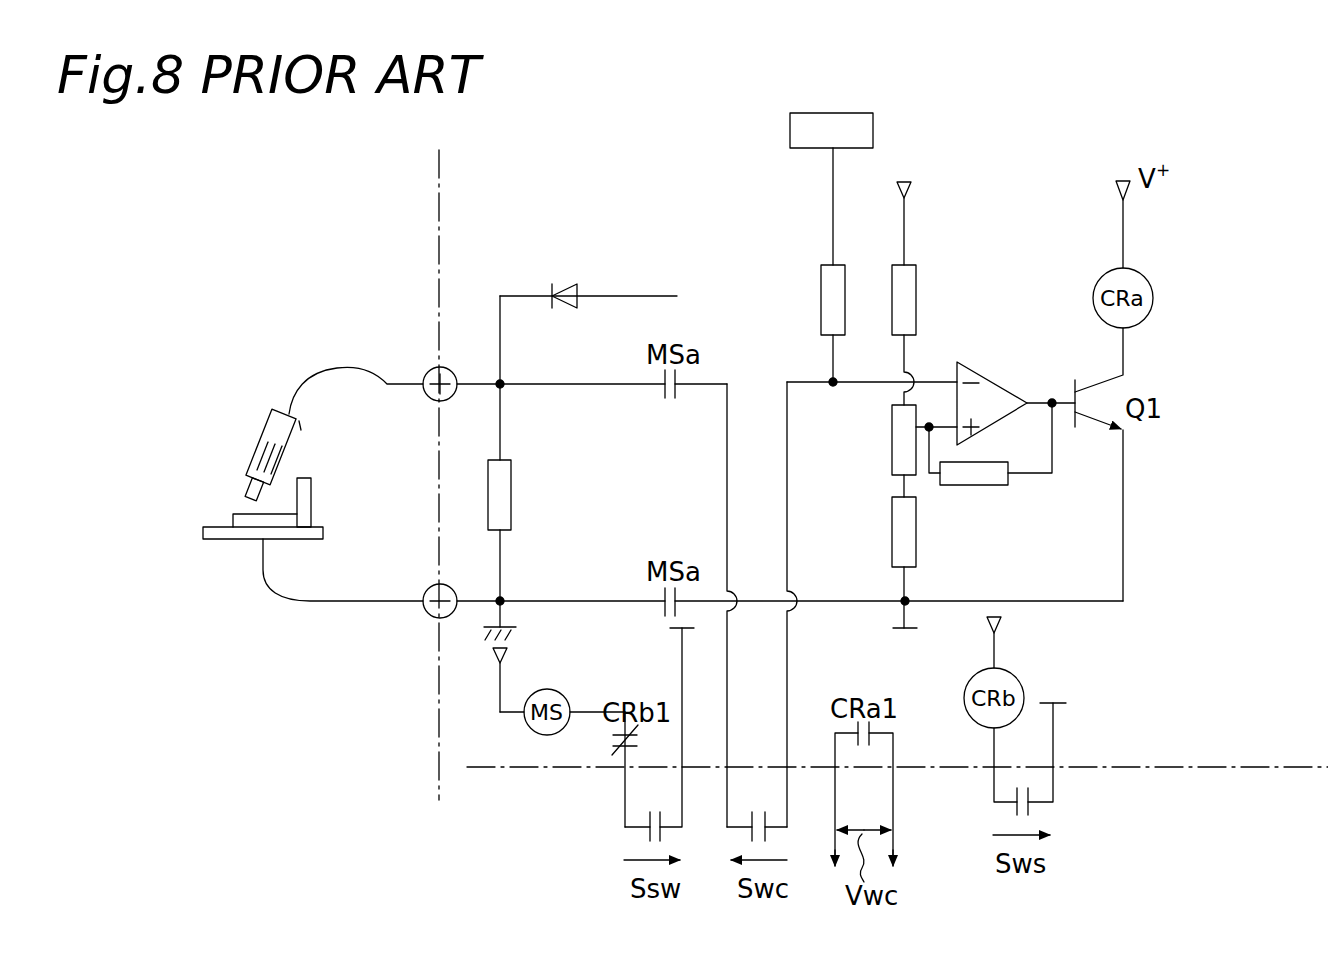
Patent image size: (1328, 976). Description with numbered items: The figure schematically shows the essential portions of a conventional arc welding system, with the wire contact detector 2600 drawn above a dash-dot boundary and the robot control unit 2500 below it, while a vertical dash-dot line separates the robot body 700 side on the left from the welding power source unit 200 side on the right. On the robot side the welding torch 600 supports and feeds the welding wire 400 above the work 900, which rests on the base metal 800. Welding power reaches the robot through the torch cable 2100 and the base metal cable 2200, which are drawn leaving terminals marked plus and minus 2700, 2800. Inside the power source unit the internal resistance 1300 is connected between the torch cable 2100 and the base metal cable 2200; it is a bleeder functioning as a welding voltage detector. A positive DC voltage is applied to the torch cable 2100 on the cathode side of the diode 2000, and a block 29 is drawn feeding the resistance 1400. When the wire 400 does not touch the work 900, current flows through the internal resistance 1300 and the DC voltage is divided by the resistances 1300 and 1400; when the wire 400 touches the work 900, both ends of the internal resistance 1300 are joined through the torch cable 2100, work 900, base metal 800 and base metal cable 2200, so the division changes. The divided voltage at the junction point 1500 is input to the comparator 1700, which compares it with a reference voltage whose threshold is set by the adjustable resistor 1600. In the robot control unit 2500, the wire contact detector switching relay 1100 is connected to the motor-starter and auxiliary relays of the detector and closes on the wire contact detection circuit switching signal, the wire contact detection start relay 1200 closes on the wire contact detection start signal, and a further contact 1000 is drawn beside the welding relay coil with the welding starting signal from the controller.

The welding power source / current setting unit 29 is at (790, 126).
The robot body 700 is at (428, 181).
The welding power source unit 200 is at (452, 181).
The diode 2000 is at (567, 284).
The positive output terminal 2700 is at (426, 376).
The negative output terminal 2800 is at (426, 594).
The torch cable 2100 is at (397, 386).
The base metal cable 2200 is at (357, 604).
The welding torch 600 is at (262, 448).
The welding wire 400 is at (252, 492).
The work 900 is at (311, 500).
The base metal 800 is at (213, 540).
The internal resistance 1300 is at (511, 489).
The resistance 1400 is at (821, 300).
The junction point 1500 is at (833, 386).
The adjustable resistor 1600 is at (893, 446).
The comparator 1700 is at (997, 380).
The wire contact detector switching relay 1100 is at (646, 830).
The wire contact detection start relay 1200 is at (748, 830).
The switch contact 1000 is at (1032, 805).
The wire contact detector 2600 is at (1243, 714).
The robot control unit 2500 is at (1243, 770).